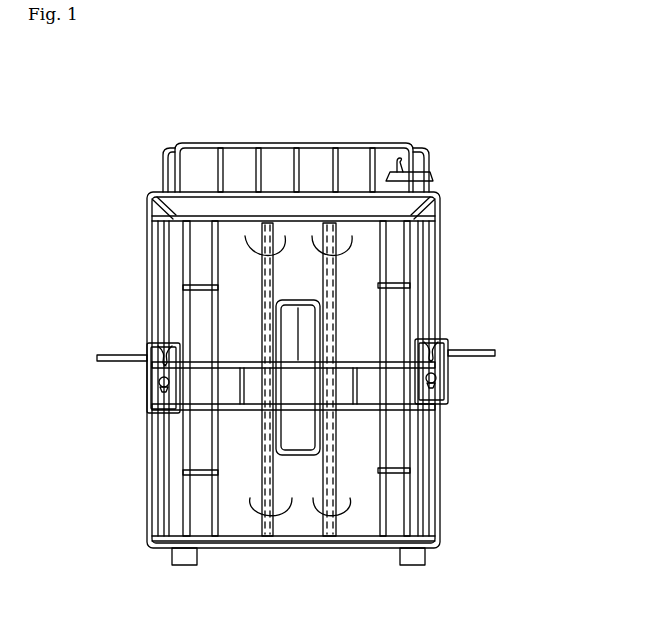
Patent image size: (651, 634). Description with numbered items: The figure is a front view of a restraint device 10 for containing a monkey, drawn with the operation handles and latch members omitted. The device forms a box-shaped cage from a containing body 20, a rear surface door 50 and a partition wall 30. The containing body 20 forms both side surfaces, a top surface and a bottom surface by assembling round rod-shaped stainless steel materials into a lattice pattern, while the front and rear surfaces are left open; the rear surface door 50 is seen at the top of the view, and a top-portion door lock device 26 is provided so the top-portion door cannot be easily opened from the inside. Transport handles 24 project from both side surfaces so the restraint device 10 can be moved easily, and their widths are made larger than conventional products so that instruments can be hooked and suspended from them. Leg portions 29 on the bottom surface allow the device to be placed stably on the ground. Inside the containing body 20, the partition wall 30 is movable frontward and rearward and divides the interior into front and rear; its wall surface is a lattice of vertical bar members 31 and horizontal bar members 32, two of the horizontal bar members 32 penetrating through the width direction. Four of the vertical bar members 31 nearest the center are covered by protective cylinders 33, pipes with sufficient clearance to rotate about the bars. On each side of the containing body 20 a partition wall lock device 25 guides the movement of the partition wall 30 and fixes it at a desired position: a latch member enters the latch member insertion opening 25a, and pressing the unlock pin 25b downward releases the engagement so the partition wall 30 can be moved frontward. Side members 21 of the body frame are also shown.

The restraint device 10 is at (560, 226).
The containing body 20 is at (151, 200).
The side posts 21 is at (170, 152).
The transport handles 24 is at (100, 352).
The partition wall lock device 25 is at (152, 396).
The latch member insertion opening 25a is at (164, 345).
The unlock pin 25b is at (159, 383).
The top-portion door lock device 26 is at (434, 177).
The leg portions 29 is at (185, 565).
The partition wall 30 is at (380, 254).
The vertical bar members 31 is at (266, 224).
The horizontal bar members 32 is at (362, 370).
The protective cylinders 33 is at (340, 244).
The rear surface door 50 is at (404, 144).